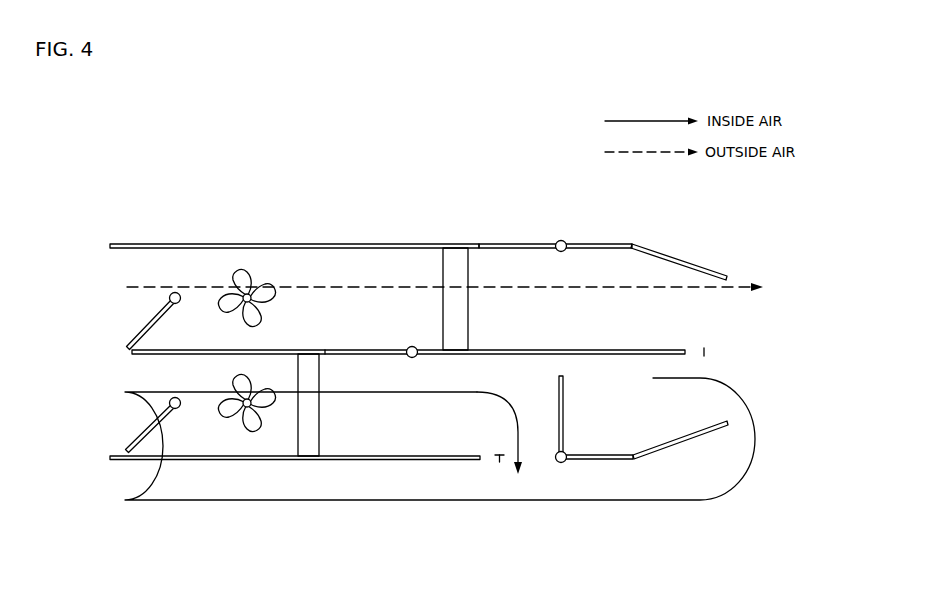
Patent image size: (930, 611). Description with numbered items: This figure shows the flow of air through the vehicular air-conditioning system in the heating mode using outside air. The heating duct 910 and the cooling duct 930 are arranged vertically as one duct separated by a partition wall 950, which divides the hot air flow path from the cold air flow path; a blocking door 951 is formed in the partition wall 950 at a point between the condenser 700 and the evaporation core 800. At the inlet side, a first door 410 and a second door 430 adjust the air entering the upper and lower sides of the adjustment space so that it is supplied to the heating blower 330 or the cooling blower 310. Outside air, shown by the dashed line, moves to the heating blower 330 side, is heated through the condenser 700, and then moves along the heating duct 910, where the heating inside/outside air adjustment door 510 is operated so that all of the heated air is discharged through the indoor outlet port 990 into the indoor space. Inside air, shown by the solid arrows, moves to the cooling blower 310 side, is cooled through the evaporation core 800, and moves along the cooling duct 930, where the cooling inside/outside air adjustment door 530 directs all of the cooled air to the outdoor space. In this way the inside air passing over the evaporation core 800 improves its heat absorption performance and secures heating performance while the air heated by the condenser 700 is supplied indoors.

The heating duct 910 is at (190, 244).
The heating blower 330 is at (258, 282).
The partition wall 950 is at (325, 350).
The blocking door 951 is at (383, 350).
The condenser 700 is at (453, 258).
The heating inside/outside air adjustment door 510 is at (512, 243).
The first door 410 is at (137, 333).
The indoor outlet port 990 is at (704, 352).
The second door 430 is at (155, 432).
The cooling blower 310 is at (257, 428).
The evaporation core 800 is at (310, 440).
The cooling duct 930 is at (433, 459).
The cooling inside/outside air adjustment door 530 is at (565, 418).